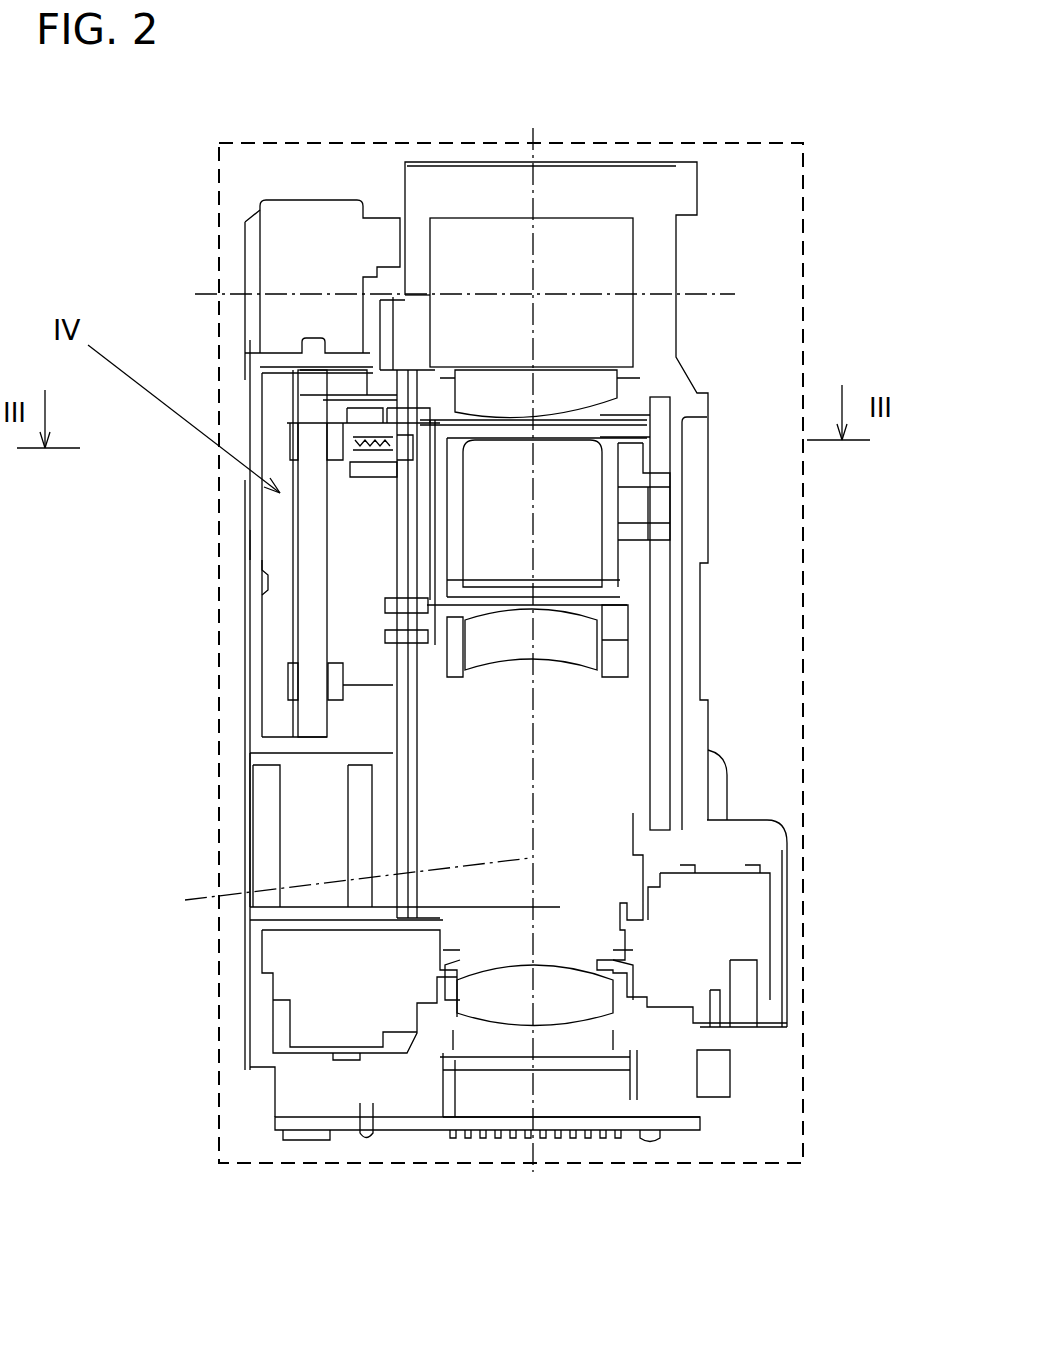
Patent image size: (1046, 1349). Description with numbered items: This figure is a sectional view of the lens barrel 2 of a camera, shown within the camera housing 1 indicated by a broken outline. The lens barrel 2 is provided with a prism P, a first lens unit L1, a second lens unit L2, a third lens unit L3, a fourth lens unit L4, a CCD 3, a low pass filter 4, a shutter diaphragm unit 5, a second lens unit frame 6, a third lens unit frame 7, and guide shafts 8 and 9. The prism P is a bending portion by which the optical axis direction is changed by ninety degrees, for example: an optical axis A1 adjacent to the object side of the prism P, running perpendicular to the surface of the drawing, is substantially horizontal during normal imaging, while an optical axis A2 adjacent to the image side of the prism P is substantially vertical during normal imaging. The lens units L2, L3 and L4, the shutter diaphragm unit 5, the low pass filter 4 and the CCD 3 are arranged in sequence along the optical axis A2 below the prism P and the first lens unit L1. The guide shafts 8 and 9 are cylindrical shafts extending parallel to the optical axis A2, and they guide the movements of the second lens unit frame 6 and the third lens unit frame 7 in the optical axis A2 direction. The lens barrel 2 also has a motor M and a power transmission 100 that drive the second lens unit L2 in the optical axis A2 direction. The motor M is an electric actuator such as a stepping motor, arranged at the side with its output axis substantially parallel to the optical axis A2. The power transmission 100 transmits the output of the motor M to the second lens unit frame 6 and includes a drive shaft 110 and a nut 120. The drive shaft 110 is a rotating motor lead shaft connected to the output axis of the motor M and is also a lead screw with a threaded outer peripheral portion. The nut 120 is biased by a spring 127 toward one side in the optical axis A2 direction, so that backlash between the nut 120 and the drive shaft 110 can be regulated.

The camera housing 1 is at (805, 178).
The lens barrel 2 is at (706, 190).
The CCD 3 is at (484, 1087).
The low pass filter 4 is at (565, 1048).
The shutter diaphragm unit 5 is at (715, 947).
The second lens unit frame 6 is at (609, 527).
The third lens unit frame 7 is at (615, 655).
The guide shaft 8 is at (405, 787).
The guide shaft 9 is at (657, 790).
The power transmission 100 is at (275, 528).
The drive shaft 110 is at (307, 628).
The nut 120 is at (290, 442).
The spring 127 is at (371, 455).
The optical axis A1 is at (545, 280).
The optical axis A2 is at (334, 887).
The motor M is at (283, 238).
The prism P is at (611, 268).
The first lens unit L1 is at (583, 388).
The second lens unit L2 is at (578, 503).
The third lens unit L3 is at (580, 632).
The fourth lens unit L4 is at (595, 1007).